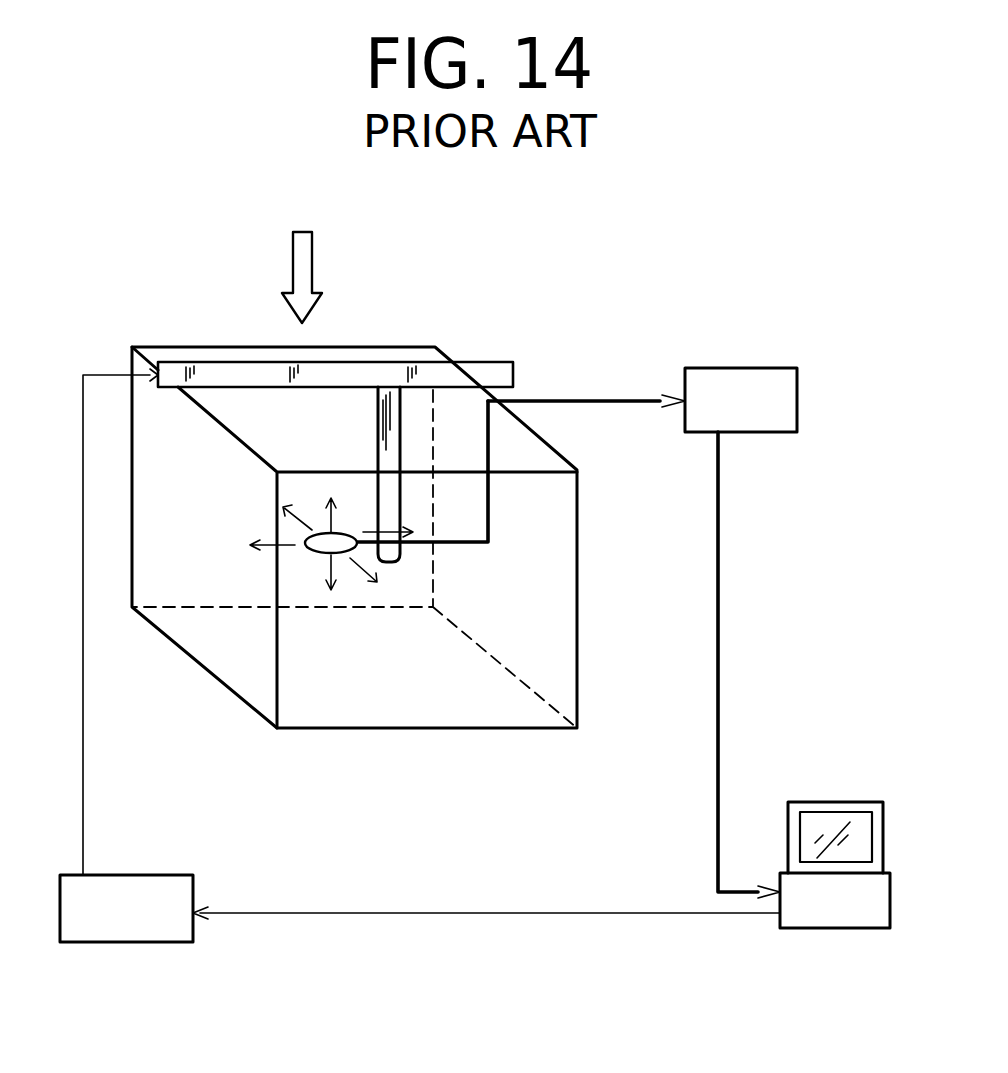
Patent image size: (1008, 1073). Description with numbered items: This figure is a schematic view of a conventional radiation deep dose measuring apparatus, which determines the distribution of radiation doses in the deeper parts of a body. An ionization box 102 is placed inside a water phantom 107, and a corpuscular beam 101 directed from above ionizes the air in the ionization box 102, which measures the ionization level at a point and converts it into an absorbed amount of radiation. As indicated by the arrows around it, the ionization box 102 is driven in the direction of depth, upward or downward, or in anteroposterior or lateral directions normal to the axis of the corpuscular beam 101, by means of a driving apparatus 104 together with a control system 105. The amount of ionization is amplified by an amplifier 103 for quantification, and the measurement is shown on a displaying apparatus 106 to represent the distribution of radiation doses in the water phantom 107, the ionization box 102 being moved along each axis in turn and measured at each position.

The corpuscular beam 101 is at (305, 253).
The ionization box 102 is at (321, 555).
The amplifier 103 is at (725, 367).
The driving apparatus 104 is at (481, 354).
The control system 105 is at (130, 943).
The displaying apparatus 106 is at (838, 929).
The water phantom 107 is at (552, 625).